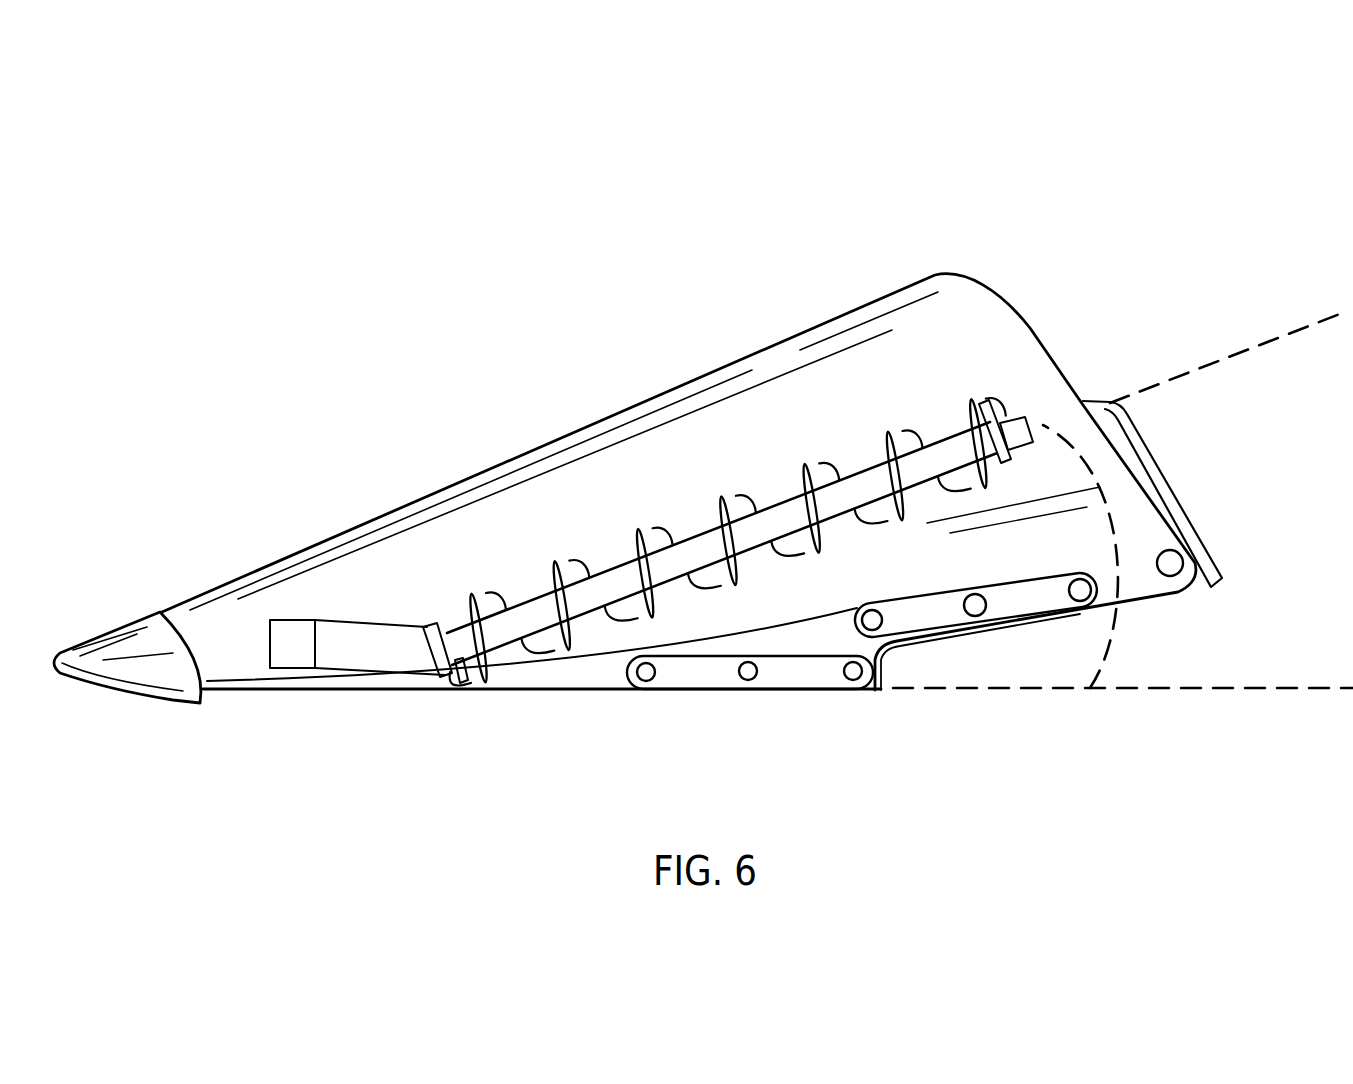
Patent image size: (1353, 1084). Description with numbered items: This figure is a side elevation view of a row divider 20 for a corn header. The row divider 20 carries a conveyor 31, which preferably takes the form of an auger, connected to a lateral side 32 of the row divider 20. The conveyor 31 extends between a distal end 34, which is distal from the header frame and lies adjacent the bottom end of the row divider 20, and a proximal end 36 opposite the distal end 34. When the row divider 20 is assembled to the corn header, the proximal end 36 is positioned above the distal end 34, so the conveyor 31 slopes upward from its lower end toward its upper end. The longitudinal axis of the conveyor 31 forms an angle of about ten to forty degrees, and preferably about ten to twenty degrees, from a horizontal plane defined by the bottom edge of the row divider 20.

The row divider 20 is at (1025, 198).
The conveyor 31 is at (693, 545).
The lateral side 32 is at (503, 497).
The distal end 34 is at (457, 683).
The proximal end 36 is at (1000, 423).